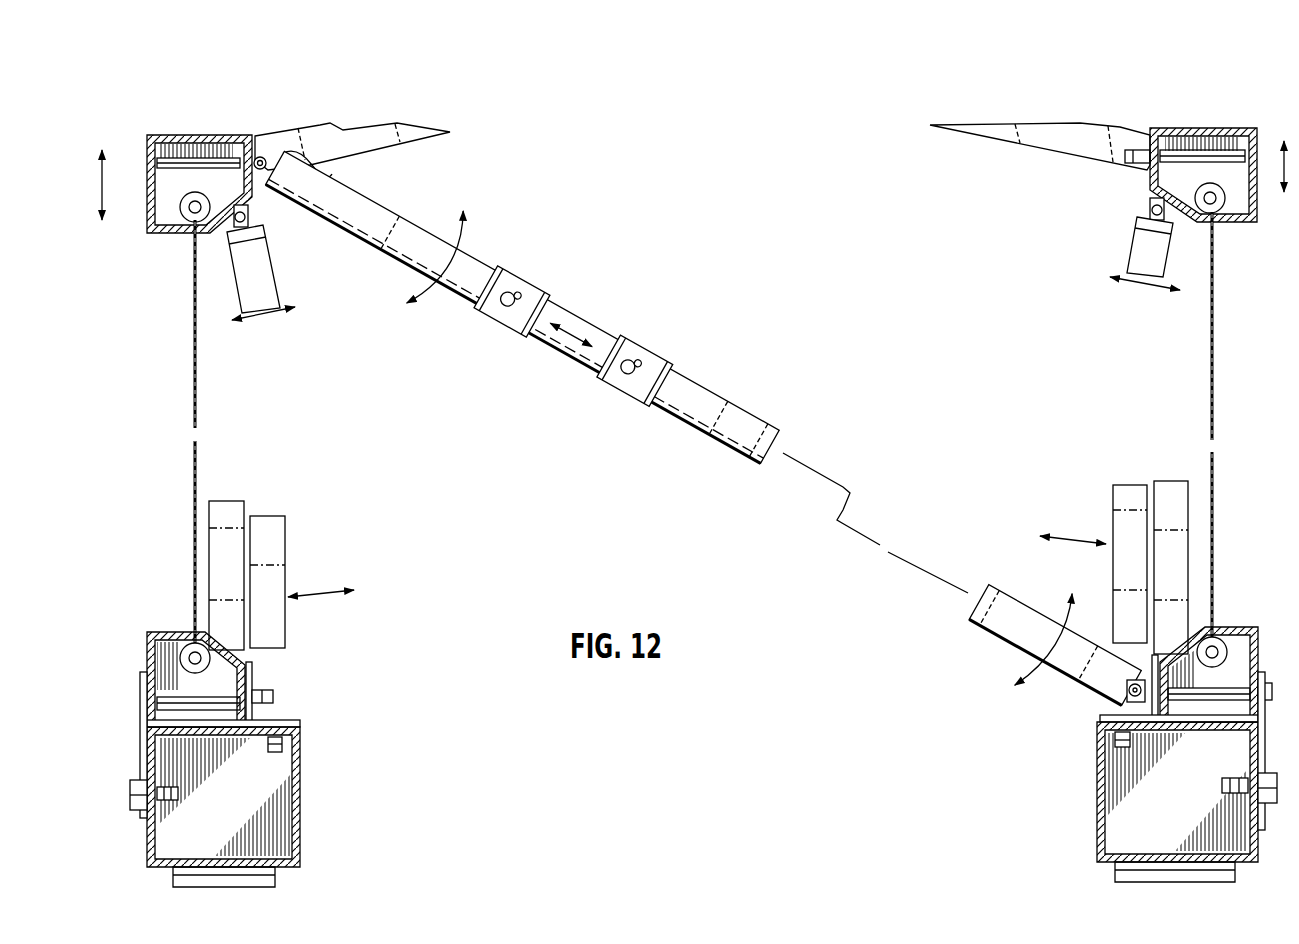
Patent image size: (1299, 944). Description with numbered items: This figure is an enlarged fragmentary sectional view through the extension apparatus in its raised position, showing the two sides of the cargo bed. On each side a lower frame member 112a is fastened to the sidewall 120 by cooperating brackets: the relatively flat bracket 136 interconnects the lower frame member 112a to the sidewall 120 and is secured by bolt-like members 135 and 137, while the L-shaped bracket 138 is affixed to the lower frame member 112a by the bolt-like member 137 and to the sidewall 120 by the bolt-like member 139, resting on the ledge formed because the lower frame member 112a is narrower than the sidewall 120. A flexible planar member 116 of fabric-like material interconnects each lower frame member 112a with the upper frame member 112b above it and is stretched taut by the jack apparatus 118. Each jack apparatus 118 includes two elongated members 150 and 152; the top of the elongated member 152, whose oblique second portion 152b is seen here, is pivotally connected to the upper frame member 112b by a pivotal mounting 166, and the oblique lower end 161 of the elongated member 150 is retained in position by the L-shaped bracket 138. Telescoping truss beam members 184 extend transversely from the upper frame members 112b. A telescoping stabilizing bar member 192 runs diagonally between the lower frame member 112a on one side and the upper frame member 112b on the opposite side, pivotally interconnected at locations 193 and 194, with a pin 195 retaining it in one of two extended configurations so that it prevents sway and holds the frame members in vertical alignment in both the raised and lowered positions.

The lower frame member 112a is at (160, 629).
The upper frame member 112b is at (152, 238).
The flexible planar member 116 is at (198, 381).
The jack apparatus 118 is at (322, 530).
The sidewall 120 is at (303, 812).
The bolt-like member 135 is at (175, 795).
The bracket 136 is at (146, 745).
The bolt-like member 137 is at (273, 699).
The L-shaped bracket 138 is at (294, 722).
The bolt-like member 139 is at (272, 747).
The elongated member 150 is at (229, 500).
The elongated member 152 is at (269, 598).
The second relatively straight portion 152b is at (276, 279).
The lower end 161 is at (247, 654).
The pivotal mounting 166 is at (248, 216).
The truss beam member 184 is at (419, 143).
The stabilizing bar member 192 is at (755, 406).
The pivotal interconnection location 193 is at (1124, 690).
The pivotal interconnection location 194 is at (323, 172).
The pin 195 is at (632, 364).